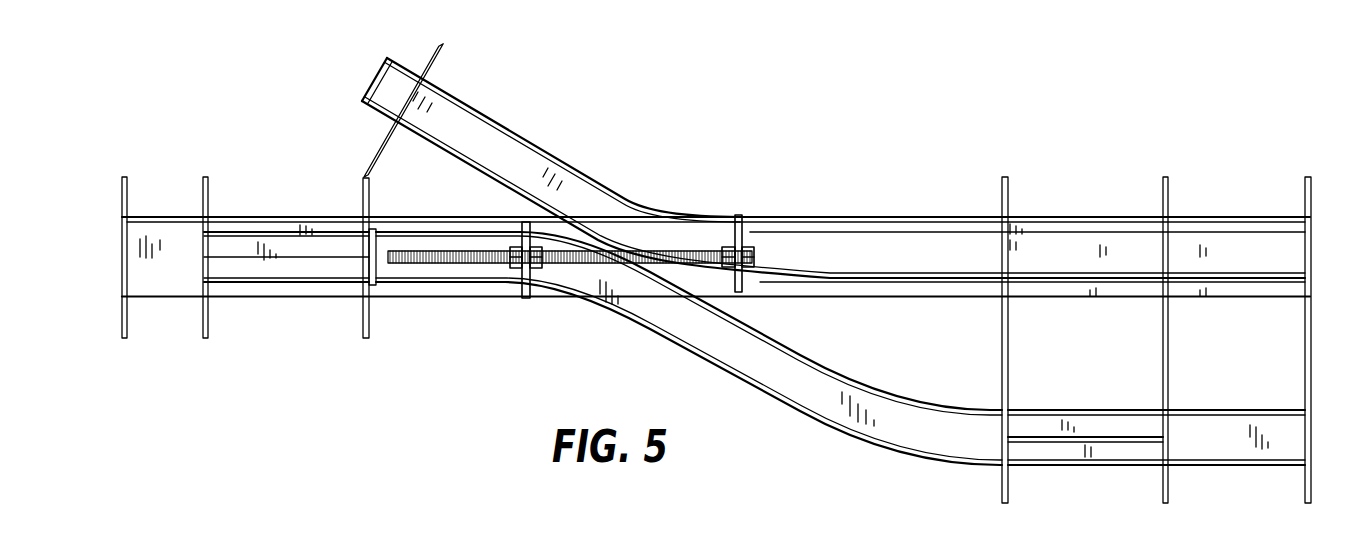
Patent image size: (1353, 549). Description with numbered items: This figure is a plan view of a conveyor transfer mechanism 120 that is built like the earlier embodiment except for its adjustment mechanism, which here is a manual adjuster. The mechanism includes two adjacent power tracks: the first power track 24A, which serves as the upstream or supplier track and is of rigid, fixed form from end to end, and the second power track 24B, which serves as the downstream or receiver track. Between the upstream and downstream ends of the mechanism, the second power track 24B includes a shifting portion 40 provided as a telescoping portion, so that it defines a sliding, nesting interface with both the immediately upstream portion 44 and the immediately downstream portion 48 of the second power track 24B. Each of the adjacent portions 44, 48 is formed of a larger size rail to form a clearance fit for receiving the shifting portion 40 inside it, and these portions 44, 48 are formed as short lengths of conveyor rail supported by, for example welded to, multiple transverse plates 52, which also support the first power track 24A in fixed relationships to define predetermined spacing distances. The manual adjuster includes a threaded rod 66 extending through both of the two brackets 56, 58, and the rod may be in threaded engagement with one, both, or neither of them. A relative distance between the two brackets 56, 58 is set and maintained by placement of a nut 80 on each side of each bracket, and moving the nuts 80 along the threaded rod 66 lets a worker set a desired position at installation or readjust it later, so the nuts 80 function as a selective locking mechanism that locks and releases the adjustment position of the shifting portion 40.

The transfer mechanism 120 is at (884, 87).
The transverse plates 52 is at (121, 189).
The downstream portion 48 is at (244, 271).
The shifting portion 40 is at (830, 400).
The first power track 24A is at (516, 113).
The second power track 24B is at (1226, 480).
The threaded rod 66 is at (585, 265).
The bracket 58 is at (527, 299).
The bracket 56 is at (742, 220).
The nuts 80 is at (524, 240).
The upstream portion 44 is at (1054, 455).